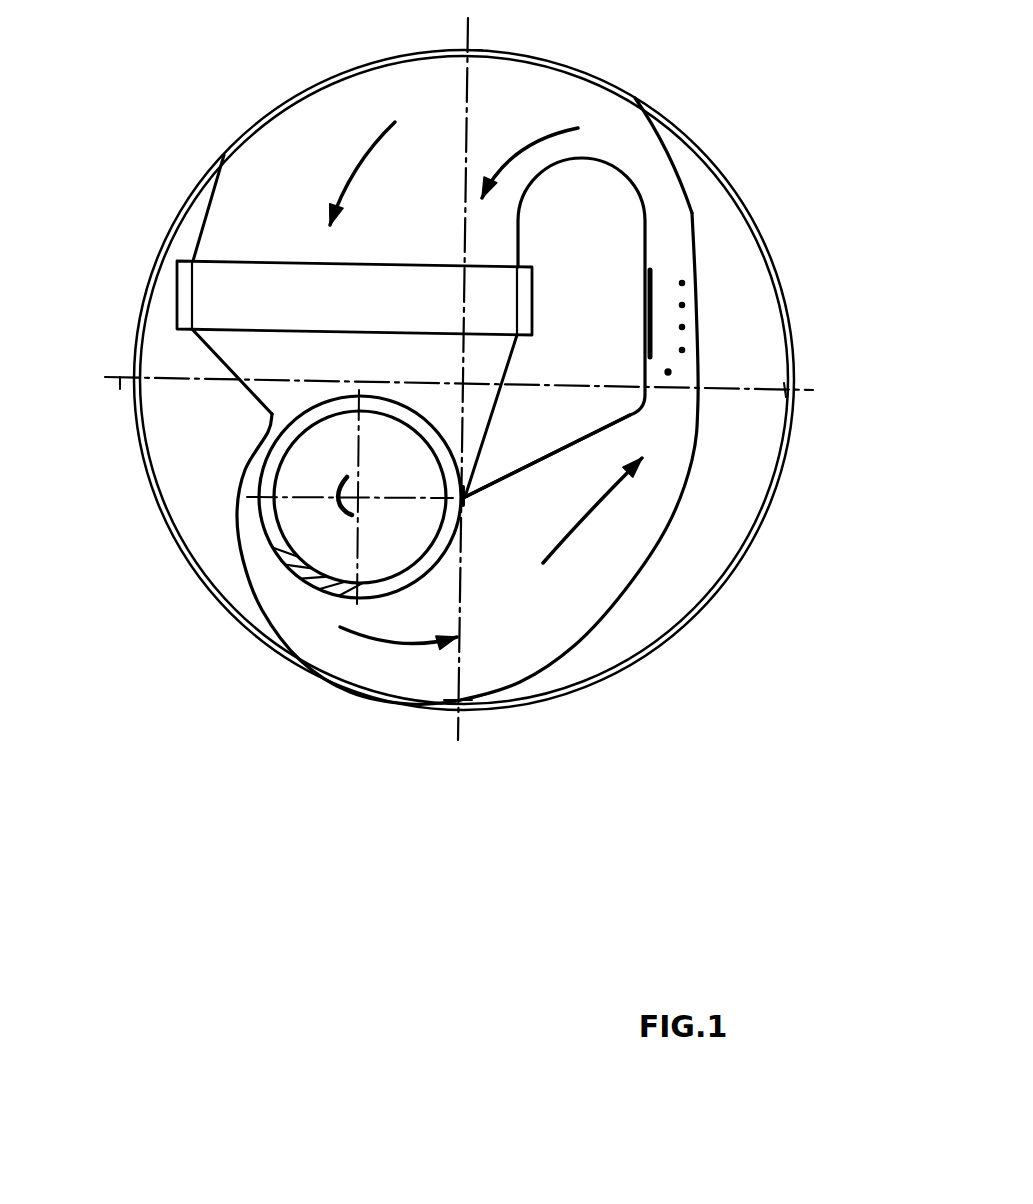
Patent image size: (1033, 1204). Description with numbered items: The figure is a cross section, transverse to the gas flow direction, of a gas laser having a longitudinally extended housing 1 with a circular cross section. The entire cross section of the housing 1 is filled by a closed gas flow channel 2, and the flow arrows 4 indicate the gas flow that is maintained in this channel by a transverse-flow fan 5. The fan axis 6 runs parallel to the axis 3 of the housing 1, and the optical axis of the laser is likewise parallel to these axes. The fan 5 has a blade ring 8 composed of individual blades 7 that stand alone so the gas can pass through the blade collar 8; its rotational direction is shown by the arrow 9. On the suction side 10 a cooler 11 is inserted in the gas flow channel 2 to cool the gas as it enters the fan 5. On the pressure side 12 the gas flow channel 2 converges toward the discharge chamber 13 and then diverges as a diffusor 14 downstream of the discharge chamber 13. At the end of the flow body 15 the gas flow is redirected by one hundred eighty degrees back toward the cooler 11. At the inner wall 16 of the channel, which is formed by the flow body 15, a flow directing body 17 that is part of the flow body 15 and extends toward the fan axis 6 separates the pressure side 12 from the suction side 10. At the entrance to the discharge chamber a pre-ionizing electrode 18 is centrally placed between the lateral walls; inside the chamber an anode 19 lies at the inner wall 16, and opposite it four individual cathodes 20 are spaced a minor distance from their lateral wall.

The housing 1 is at (252, 128).
The gas flow channel 2 is at (322, 103).
The axis of the housing 3 is at (473, 372).
The flow arrows 4 is at (377, 125).
The transverse-flow fan 5 is at (297, 530).
The fan axis 6 is at (363, 495).
The blades 7 is at (327, 587).
The blade ring 8 is at (268, 513).
The arrow 9 is at (337, 483).
The suction side 10 is at (240, 350).
The cooler 11 is at (208, 270).
The pressure side 12 is at (490, 637).
The discharge chamber 13 is at (763, 370).
The diffusor 14 is at (637, 180).
The flow body 15 is at (555, 327).
The inner wall 16 is at (590, 432).
The flow directing body 17 is at (486, 480).
The pre-ionizing electrode 18 is at (668, 372).
The anode 19 is at (645, 315).
The cathodes 20 is at (682, 283).